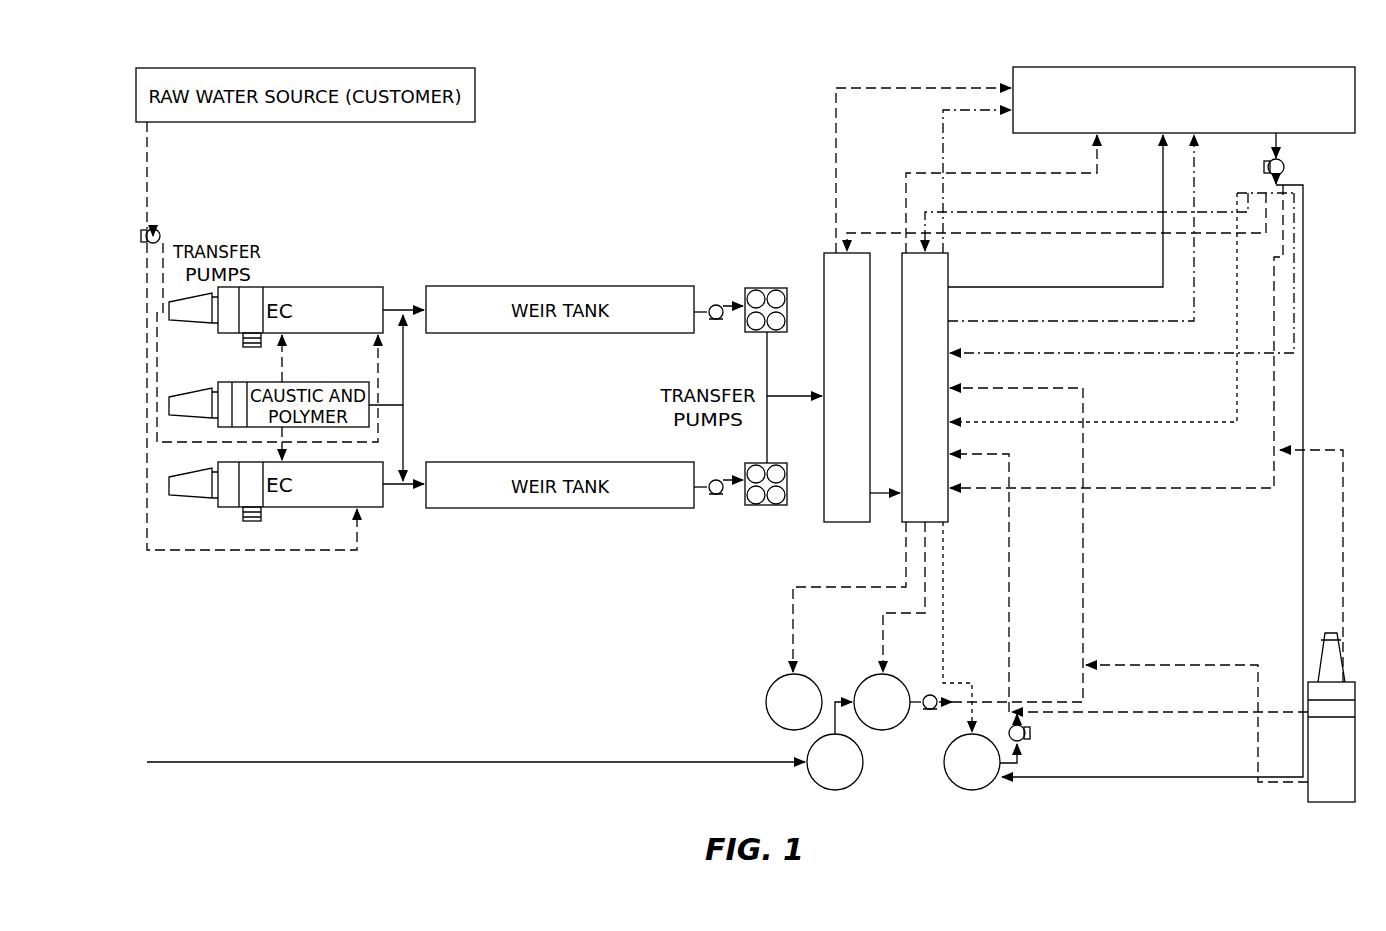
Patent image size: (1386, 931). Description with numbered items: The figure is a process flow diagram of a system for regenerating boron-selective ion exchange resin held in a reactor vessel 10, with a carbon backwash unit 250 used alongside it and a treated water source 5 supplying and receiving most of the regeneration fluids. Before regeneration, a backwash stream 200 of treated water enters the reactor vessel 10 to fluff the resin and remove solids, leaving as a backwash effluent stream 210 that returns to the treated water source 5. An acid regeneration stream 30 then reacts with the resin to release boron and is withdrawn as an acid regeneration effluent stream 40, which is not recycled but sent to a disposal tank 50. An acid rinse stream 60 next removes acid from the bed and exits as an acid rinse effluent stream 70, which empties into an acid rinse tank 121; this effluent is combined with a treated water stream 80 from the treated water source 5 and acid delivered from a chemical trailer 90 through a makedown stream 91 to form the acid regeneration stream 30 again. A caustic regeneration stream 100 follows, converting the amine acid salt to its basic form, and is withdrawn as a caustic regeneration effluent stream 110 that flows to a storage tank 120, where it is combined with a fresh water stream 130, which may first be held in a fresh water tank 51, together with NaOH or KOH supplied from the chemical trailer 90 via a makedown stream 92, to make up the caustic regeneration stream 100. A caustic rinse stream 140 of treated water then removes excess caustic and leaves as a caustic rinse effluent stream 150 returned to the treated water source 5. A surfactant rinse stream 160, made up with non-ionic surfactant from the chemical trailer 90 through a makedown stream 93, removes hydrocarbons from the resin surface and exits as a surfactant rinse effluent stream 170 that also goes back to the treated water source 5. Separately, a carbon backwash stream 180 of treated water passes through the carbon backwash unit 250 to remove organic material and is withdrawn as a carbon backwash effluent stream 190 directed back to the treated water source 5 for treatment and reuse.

The treated water source 5 is at (1182, 67).
The reactor vessel 10 is at (940, 329).
The carbon backwash unit 250 is at (866, 329).
The carbon backwash effluent stream 190 is at (836, 141).
The caustic rinse effluent stream 150 is at (943, 141).
The surfactant rinse effluent stream 170 is at (906, 199).
The caustic rinse stream 140 is at (997, 212).
The carbon backwash stream 180 is at (1015, 234).
The backwash effluent stream 210 is at (1020, 322).
The backwash stream 200 is at (1020, 354).
The acid rinse stream 60 is at (1126, 422).
The surfactant rinse stream 160 is at (1135, 488).
The acid regeneration effluent stream 40 is at (906, 572).
The caustic regeneration effluent stream 110 is at (883, 650).
The acid rinse effluent stream 70 is at (943, 577).
The acid regeneration stream 30 is at (1010, 577).
The caustic regeneration stream 100 is at (1084, 578).
The disposal tank 50 is at (767, 698).
The fresh water tank 51 is at (814, 789).
The storage tank 120 is at (878, 731).
The acid rinse tank 121 is at (951, 789).
The fresh water stream 130 is at (488, 760).
The treated water stream 80 is at (1137, 777).
The makedown stream 91 is at (1142, 712).
The makedown stream 92 is at (1142, 665).
The makedown stream 93 is at (1343, 555).
The chemical trailer 90 is at (1308, 795).